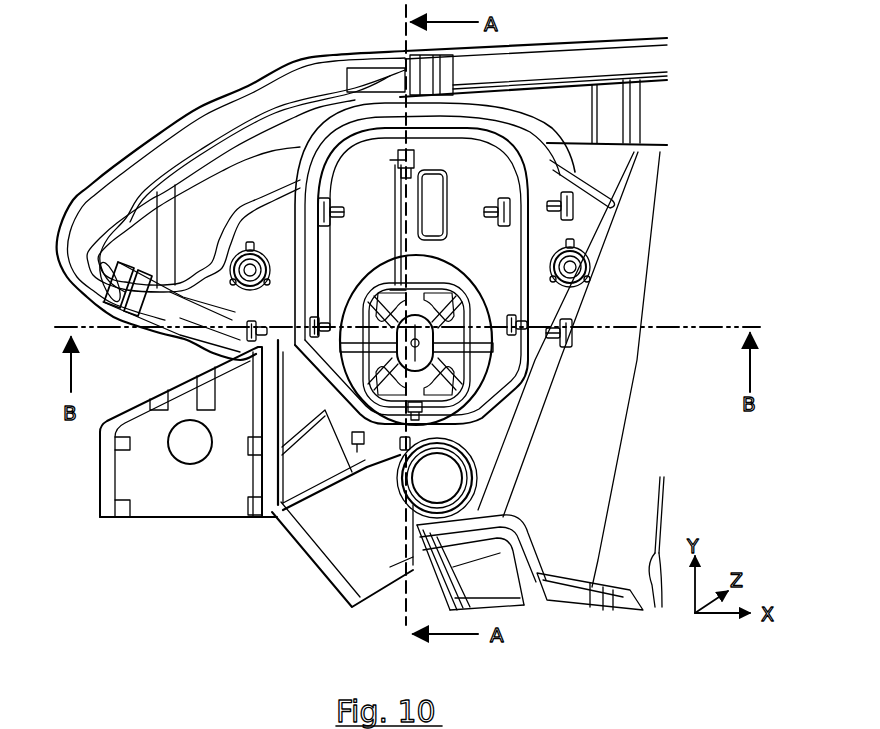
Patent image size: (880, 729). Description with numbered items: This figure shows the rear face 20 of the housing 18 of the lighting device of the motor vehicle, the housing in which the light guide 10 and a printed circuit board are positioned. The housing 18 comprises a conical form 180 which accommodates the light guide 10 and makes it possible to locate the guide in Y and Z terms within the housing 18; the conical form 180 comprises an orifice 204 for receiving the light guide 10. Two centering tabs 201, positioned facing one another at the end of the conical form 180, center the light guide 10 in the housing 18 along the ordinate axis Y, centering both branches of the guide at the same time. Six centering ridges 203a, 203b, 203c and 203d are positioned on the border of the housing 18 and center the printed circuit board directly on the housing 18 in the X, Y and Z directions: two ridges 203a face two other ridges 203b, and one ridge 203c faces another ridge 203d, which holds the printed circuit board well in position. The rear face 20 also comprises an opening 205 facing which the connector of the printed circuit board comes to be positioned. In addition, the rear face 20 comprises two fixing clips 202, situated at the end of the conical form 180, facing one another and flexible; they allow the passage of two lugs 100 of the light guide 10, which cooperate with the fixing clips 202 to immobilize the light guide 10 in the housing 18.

The light guide 10 is at (518, 327).
The housing 18 is at (148, 113).
The rear face 20 is at (655, 204).
The lugs 100 is at (664, 721).
The conical form 180 is at (400, 288).
The centering tabs 201 is at (375, 332).
The fixing clips 202 is at (413, 297).
The centering ridges 203a is at (316, 213).
The centering ridges 203b is at (497, 213).
The centering ridge 203c is at (440, 203).
The centering ridge 203d is at (360, 430).
The orifice 204 is at (393, 393).
The opening 205 is at (413, 157).